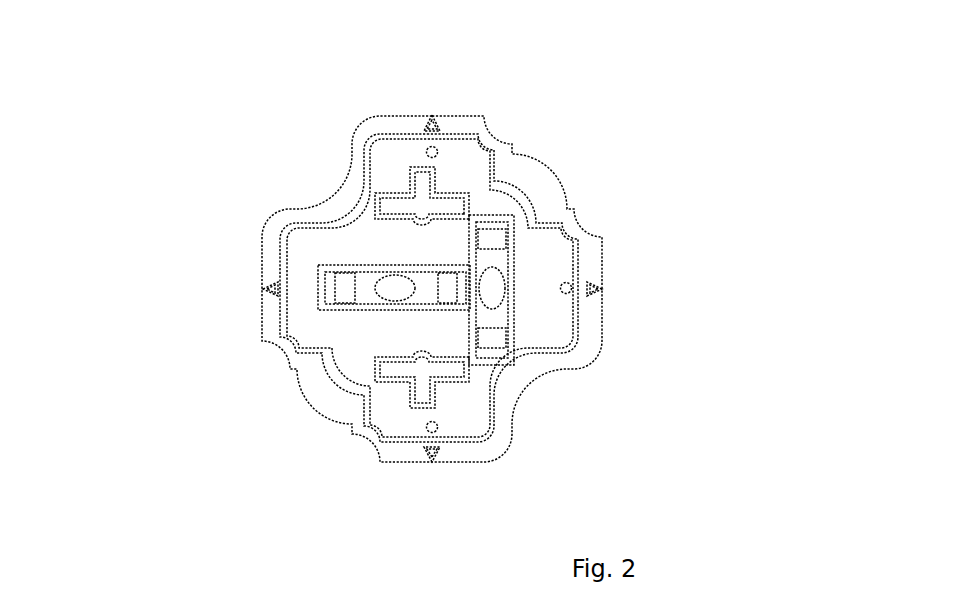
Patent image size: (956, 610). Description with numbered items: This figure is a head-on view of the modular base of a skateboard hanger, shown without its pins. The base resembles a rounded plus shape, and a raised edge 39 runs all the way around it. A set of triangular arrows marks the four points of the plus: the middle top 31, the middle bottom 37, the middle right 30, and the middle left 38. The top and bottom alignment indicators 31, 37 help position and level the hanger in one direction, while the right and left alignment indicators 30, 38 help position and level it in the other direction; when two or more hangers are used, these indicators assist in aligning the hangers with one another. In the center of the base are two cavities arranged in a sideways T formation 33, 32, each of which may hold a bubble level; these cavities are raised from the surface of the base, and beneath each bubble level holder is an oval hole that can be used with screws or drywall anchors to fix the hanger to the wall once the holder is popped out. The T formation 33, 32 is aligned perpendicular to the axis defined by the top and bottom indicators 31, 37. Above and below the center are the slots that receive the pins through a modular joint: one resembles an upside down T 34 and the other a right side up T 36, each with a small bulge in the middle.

The middle right alignment indicator 30 is at (631, 283).
The middle top alignment indicator 31 is at (430, 85).
The insert cavity of T formation 32 is at (528, 255).
The insert cavity of T formation 33 is at (442, 245).
The upside down T slot 34 is at (377, 185).
The right side up T slot 36 is at (465, 388).
The middle bottom alignment indicator 37 is at (424, 482).
The middle left alignment indicator 38 is at (236, 276).
The raised edge 39 is at (277, 206).